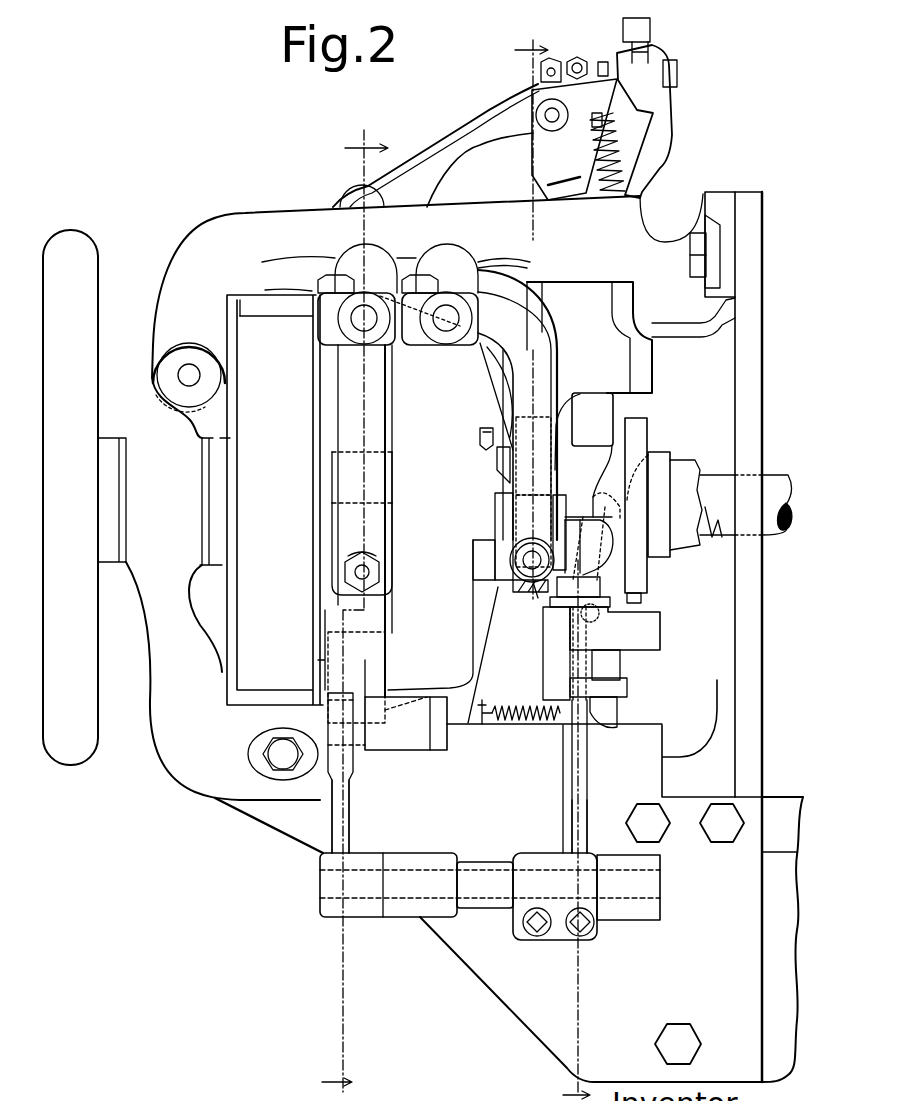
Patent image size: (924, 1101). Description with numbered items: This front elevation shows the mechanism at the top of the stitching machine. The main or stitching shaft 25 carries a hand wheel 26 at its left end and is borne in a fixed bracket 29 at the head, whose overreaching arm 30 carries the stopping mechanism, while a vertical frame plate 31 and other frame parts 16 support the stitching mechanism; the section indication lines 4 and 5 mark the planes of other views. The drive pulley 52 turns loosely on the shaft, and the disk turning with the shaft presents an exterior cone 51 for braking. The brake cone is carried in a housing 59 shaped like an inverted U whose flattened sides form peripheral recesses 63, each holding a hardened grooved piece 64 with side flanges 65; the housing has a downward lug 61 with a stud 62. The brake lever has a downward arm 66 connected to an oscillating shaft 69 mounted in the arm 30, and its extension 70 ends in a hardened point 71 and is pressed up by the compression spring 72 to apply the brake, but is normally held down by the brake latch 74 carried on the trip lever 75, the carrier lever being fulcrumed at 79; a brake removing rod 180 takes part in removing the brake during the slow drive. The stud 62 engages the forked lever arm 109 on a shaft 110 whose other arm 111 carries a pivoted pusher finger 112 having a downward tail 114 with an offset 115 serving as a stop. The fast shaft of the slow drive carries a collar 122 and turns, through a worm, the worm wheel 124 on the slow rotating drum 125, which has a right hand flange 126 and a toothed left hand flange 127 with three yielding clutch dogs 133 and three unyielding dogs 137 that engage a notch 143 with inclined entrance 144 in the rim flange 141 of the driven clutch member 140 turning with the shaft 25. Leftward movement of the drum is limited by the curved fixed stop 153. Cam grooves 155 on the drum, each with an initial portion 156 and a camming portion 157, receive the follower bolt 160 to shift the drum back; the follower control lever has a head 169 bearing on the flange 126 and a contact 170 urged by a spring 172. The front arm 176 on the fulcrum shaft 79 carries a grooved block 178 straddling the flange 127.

The section line 4 is at (355, 602).
The section line 5 is at (552, 558).
The frame side wall 16 is at (782, 939).
The main or stitching shaft 25 is at (730, 504).
The hand wheel 26 is at (84, 497).
The fixed bracket 29 is at (464, 822).
The overreaching arm 30 is at (443, 433).
The vertical frame plate 31 is at (726, 637).
The exterior cone 51 is at (405, 489).
The drive pulley 52 is at (276, 500).
The housing 59 is at (330, 380).
The downwardly extending lug 61 is at (403, 735).
The stud 62 is at (355, 742).
The peripheral recesses 63 is at (333, 462).
The hardened and grooved piece 64 is at (345, 585).
The side flanges 65 is at (335, 545).
The downwardly extending arm 66 is at (367, 521).
The oscillating shaft 69 is at (350, 320).
The extending arm 70 is at (468, 124).
The hardened point 71 is at (603, 66).
The compression spring 72 is at (606, 150).
The brake latch 74 is at (628, 42).
The trip lever 75 is at (673, 143).
The fulcrum shaft 79 is at (462, 318).
The lever arm 109 is at (346, 828).
The shaft 110 is at (484, 862).
The upward lever arm 111 is at (572, 808).
The pivoted finger or pusher 112 is at (648, 626).
The tail or downward extension 114 is at (622, 663).
The offset 115 is at (622, 686).
The collar 122 is at (562, 415).
The worm wheel 124 is at (538, 598).
The slow rotating drum 125 is at (622, 496).
The right hand flange 126 is at (640, 433).
The left hand flange 127 is at (512, 590).
The clutch dogs 133 is at (492, 541).
The unyielding clutch dogs 137 is at (497, 476).
The driven clutch member 140 is at (480, 570).
The rim flange 141 is at (485, 455).
The notch 143 is at (485, 425).
The inclined entrance 144 is at (480, 437).
The fixed stop 153 is at (592, 419).
The cams 155 is at (588, 481).
The initial groove portion 156 is at (607, 537).
The camming portion 157 is at (603, 575).
The follower 160 is at (595, 583).
The upper head or contact portion 169 is at (650, 447).
The offset flange or contact 170 is at (605, 712).
The spring 172 is at (506, 718).
The downward extension or arm 176 is at (517, 435).
The grooved block 178 is at (556, 508).
The brake removing rod or link 180 is at (574, 129).